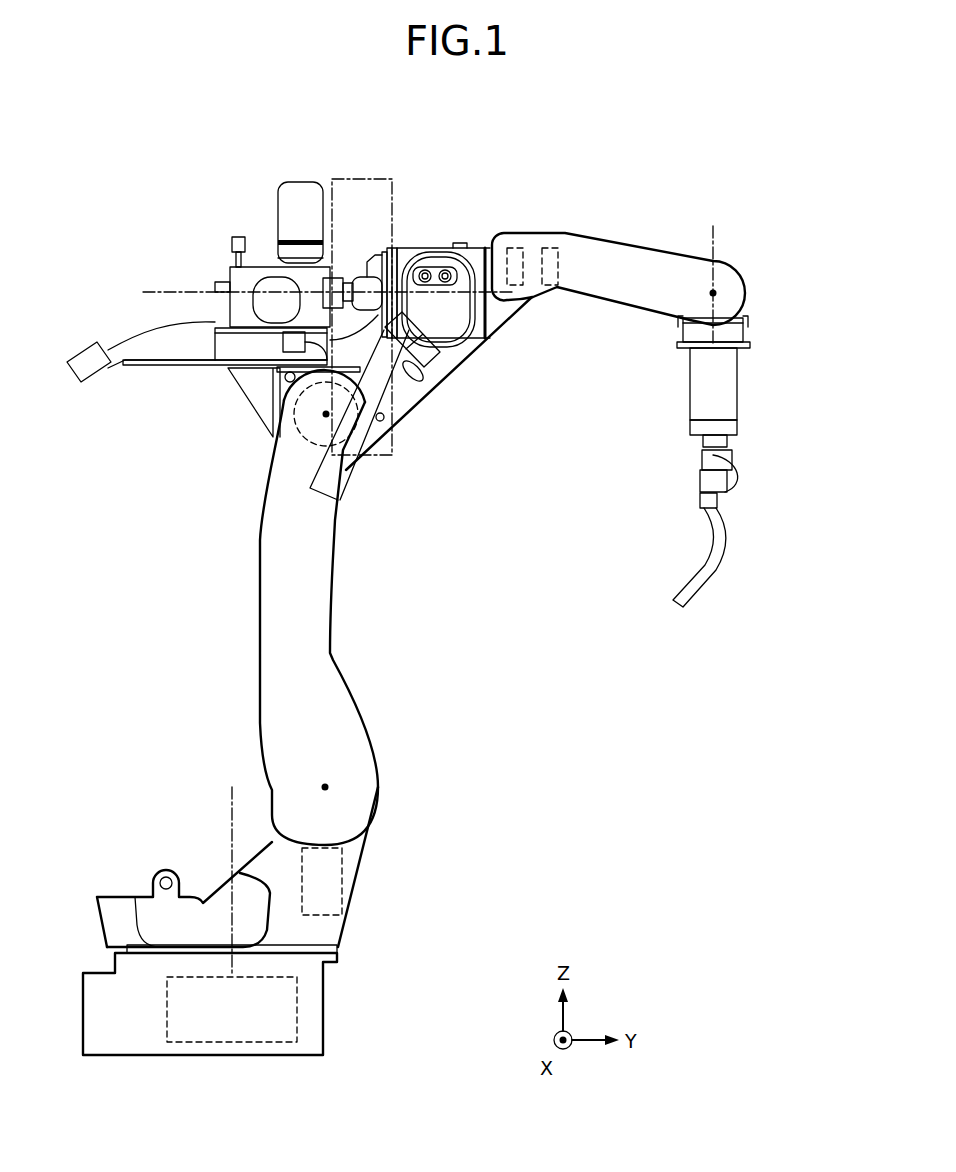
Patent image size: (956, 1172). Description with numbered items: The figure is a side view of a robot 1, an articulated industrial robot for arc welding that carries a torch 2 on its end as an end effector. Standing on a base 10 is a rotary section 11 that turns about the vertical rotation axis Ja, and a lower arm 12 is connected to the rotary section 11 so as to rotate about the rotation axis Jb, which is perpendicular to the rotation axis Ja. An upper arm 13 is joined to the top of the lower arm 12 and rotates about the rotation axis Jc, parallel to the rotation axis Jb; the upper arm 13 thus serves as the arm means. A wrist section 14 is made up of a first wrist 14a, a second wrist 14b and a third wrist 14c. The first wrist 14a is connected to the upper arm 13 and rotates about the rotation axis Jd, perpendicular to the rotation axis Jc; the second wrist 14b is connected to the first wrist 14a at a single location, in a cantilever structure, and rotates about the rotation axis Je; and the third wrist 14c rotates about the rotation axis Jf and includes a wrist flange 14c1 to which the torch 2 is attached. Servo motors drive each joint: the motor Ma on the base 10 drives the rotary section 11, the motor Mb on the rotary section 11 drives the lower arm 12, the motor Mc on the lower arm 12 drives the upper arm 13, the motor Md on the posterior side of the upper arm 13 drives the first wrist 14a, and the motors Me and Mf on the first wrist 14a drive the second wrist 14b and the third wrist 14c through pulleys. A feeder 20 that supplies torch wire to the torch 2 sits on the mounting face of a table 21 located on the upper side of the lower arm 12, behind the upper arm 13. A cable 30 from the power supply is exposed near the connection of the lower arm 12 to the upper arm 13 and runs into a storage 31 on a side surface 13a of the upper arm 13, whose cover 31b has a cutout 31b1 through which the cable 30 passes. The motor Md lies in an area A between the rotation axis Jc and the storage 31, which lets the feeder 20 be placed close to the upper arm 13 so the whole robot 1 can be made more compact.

The robot 1 is at (437, 188).
The torch 2 is at (697, 398).
The base 10 is at (312, 1037).
The rotary section 11 is at (335, 928).
The lower arm 12 is at (340, 713).
The upper arm 13 is at (408, 250).
The side surface 13a is at (478, 262).
The wrist section 14 is at (674, 297).
The first wrist 14a is at (627, 247).
The second wrist 14b is at (740, 333).
The third wrist 14c is at (745, 348).
The wrist flange 14c1 is at (678, 349).
The feeder 20 is at (262, 262).
The table 21 is at (230, 373).
The cable 30 is at (348, 432).
The storage 31 is at (451, 350).
The cover 31b is at (448, 320).
The cutout 31b1 is at (411, 377).
The area A is at (345, 179).
The rotation axis Ja is at (230, 824).
The rotation axis Jb is at (325, 787).
The rotation axis Jc is at (326, 414).
The rotation axis Jd is at (172, 290).
The rotation axis Je is at (713, 293).
The rotation axis Jf is at (715, 232).
The motor Ma is at (297, 996).
The motor Mb is at (342, 863).
The motor Mc is at (293, 420).
The motor Md is at (372, 282).
The motor Me is at (548, 248).
The motor Mf is at (513, 248).